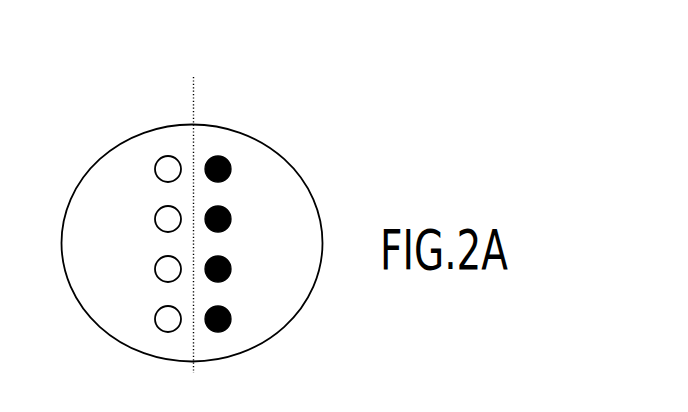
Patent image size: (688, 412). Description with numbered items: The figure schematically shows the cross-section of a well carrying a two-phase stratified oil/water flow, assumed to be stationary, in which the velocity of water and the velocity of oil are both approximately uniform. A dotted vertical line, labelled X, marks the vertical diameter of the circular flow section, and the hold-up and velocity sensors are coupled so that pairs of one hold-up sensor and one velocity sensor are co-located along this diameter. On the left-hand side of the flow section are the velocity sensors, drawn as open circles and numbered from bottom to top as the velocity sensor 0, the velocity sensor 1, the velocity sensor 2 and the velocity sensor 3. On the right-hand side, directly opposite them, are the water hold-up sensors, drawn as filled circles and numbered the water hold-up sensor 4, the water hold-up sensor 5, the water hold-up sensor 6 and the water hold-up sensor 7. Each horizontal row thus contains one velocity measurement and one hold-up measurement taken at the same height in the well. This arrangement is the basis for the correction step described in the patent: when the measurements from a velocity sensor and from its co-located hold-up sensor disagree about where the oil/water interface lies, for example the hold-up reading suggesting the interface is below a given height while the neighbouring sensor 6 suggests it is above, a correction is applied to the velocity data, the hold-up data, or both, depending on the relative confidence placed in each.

The axis / dividing line X is at (206, 222).
The velocity sensor 0 is at (160, 319).
The velocity sensor 1 is at (160, 269).
The velocity sensor 2 is at (160, 219).
The velocity sensor 3 is at (160, 169).
The water hold-up sensor 4 is at (227, 319).
The water hold-up sensor 5 is at (227, 269).
The water hold-up sensor 6 is at (227, 219).
The water hold-up sensor 7 is at (227, 169).